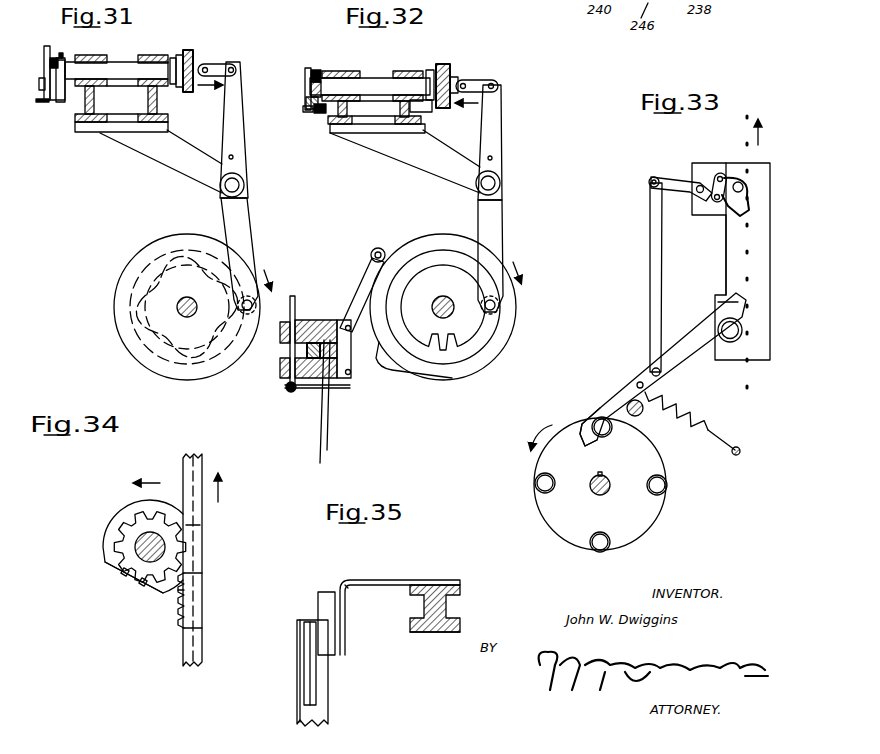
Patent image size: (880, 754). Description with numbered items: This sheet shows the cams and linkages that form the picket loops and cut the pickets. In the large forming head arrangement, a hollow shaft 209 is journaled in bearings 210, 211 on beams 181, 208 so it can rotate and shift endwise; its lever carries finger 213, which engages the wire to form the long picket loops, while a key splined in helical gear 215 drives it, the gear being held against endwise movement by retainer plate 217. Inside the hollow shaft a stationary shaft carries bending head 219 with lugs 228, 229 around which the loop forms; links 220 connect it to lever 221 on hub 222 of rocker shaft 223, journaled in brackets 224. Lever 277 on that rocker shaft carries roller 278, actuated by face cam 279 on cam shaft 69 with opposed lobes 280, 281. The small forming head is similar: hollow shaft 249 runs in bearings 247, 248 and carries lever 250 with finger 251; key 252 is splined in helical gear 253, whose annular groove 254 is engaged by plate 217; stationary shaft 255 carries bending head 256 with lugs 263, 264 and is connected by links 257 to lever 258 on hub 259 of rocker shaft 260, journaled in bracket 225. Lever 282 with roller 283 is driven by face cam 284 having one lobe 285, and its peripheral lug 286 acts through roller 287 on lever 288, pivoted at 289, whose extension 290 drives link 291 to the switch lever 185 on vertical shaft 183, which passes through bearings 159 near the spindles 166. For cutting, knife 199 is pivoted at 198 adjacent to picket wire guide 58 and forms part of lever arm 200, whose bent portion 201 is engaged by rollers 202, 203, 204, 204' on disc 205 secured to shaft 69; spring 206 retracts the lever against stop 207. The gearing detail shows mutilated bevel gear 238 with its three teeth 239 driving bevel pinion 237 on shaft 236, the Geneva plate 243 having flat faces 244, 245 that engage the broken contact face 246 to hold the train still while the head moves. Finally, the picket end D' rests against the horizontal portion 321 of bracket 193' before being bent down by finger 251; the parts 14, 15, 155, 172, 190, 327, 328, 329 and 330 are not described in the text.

In FIG. 32, the clutch plate 14 is at (320, 320).
In FIG. 32, the clutch hub 15 is at (327, 378).
In FIG. 33, the guide 58 is at (752, 330).
In FIG. 31, the cam shaft 69 is at (183, 315).
In FIG. 32, the cam shaft 69 is at (452, 315).
In FIG. 33, the cam shaft 69 is at (591, 488).
In FIG. 32, the friction disc 155 is at (308, 320).
In FIG. 32, the bearings 159 is at (290, 348).
In FIG. 35, the spindles 166 is at (330, 687).
In FIG. 35, the guide strip 172 is at (308, 683).
In FIG. 31, the beam 181 is at (78, 122).
In FIG. 32, the beam 181 is at (332, 130).
In FIG. 35, the beam 181 is at (428, 628).
In FIG. 32, the vertical shaft 183 is at (292, 296).
In FIG. 32, the lever 185 is at (296, 396).
In FIG. 35, the block 190 is at (325, 645).
In FIG. 35, the bracket 193' is at (435, 591).
In FIG. 33, the pivot 198 is at (730, 343).
In FIG. 33, the knife 199 is at (722, 320).
In FIG. 33, the lever arm 200 is at (630, 390).
In FIG. 33, the bent portion 201 is at (585, 432).
In FIG. 33, the roller 202 is at (613, 427).
In FIG. 33, the roller 203 is at (667, 485).
In FIG. 33, the roller 204 is at (623, 547).
In FIG. 33, the roller 204' is at (515, 479).
In FIG. 33, the disc 205 is at (630, 503).
In FIG. 33, the spring 206 is at (712, 431).
In FIG. 33, the stop 207 is at (650, 424).
In FIG. 31, the beam 208 is at (168, 120).
In FIG. 32, the beam 208 is at (374, 112).
In FIG. 31, the hollow shaft 209 is at (125, 62).
In FIG. 31, the bearing 210 is at (92, 48).
In FIG. 31, the bearing 211 is at (160, 55).
In FIG. 31, the finger 213 is at (40, 103).
In FIG. 31, the helical gear 215 is at (192, 56).
In FIG. 32, the retainer plate 217 is at (432, 108).
In FIG. 31, the bending head 219 is at (46, 50).
In FIG. 31, the links 220 is at (222, 64).
In FIG. 31, the lever 221 is at (243, 100).
In FIG. 31, the hub 222 is at (247, 157).
In FIG. 31, the rocker shaft 223 is at (240, 185).
In FIG. 31, the brackets 224 is at (168, 153).
In FIG. 32, the bracket 225 is at (440, 172).
In FIG. 31, the lug 228 is at (50, 62).
In FIG. 31, the lug 229 is at (40, 86).
In FIG. 34, the shaft 236 is at (140, 545).
In FIG. 34, the bevel pinion 237 is at (122, 575).
In FIG. 34, the mutilated bevel gear 238 is at (195, 603).
In FIG. 34, the teeth 239 is at (180, 612).
In FIG. 34, the Geneva plate 243 is at (126, 517).
In FIG. 34, the flat face 244 is at (186, 525).
In FIG. 34, the flat face 245 is at (112, 566).
In FIG. 34, the broken contact face 246 is at (183, 472).
In FIG. 32, the bearing 247 is at (352, 67).
In FIG. 32, the bearing 248 is at (405, 72).
In FIG. 32, the hollow shaft 249 is at (370, 82).
In FIG. 32, the lever 250 is at (318, 113).
In FIG. 32, the finger 251 is at (303, 110).
In FIG. 32, the key 252 is at (458, 80).
In FIG. 32, the helical gear 253 is at (448, 68).
In FIG. 32, the annular groove 254 is at (432, 70).
In FIG. 32, the stationary shaft 255 is at (307, 74).
In FIG. 32, the bending head 256 is at (316, 70).
In FIG. 32, the links 257 is at (500, 84).
In FIG. 32, the lever 258 is at (500, 118).
In FIG. 32, the hub 259 is at (503, 158).
In FIG. 32, the rocker shaft 260 is at (496, 183).
In FIG. 32, the lug 263 is at (311, 88).
In FIG. 32, the lug 264 is at (306, 102).
In FIG. 31, the lever 277 is at (243, 218).
In FIG. 31, the roller 278 is at (244, 310).
In FIG. 31, the face cam 279 is at (165, 352).
In FIG. 31, the lobe 280 is at (138, 305).
In FIG. 31, the lobe 281 is at (237, 318).
In FIG. 32, the lever 282 is at (500, 222).
In FIG. 32, the roller 283 is at (498, 312).
In FIG. 32, the face cam 284 is at (468, 348).
In FIG. 32, the lobe 285 is at (438, 348).
In FIG. 32, the lug 286 is at (392, 378).
In FIG. 32, the roller 287 is at (382, 250).
In FIG. 32, the lever 288 is at (362, 284).
In FIG. 32, the pivot 289 is at (348, 380).
In FIG. 32, the extension 290 is at (327, 450).
In FIG. 32, the link 291 is at (320, 463).
In FIG. 35, the horizontal portion 321 is at (362, 578).
In FIG. 33, the hook 327 is at (735, 205).
In FIG. 33, the link 328 is at (718, 176).
In FIG. 33, the lever 329 is at (676, 180).
In FIG. 33, the arm 330 is at (650, 272).
In FIG. 35, the end of picket D' is at (364, 608).